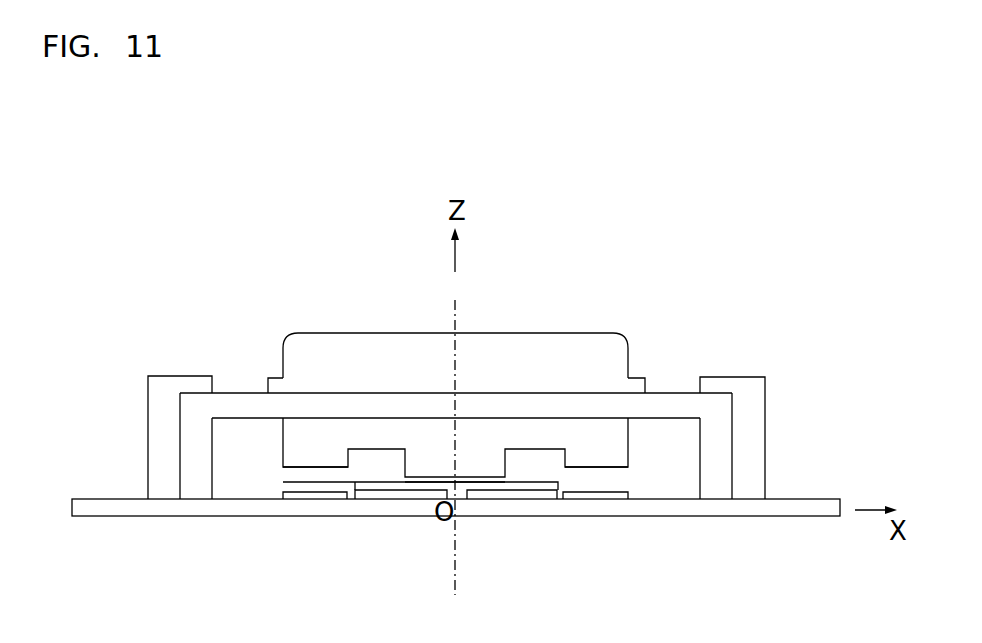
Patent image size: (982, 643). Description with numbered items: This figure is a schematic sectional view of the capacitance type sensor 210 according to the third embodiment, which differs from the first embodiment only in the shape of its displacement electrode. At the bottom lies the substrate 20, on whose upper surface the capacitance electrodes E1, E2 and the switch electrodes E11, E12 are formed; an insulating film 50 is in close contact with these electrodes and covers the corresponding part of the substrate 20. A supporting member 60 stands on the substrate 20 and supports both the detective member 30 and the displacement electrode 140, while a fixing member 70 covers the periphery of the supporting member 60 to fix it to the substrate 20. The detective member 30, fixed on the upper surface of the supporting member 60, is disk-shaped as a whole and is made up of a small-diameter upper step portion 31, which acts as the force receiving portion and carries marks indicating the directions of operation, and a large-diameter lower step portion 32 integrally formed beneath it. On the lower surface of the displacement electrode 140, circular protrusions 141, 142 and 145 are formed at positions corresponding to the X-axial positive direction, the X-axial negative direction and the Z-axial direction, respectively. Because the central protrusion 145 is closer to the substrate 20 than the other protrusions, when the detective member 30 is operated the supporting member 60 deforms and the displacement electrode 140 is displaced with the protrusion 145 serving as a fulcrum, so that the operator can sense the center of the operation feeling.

The substrate 20 is at (123, 505).
The detective member 30 is at (295, 262).
The upper step portion 31 is at (311, 350).
The lower step portion 32 is at (275, 383).
The insulating film 50 is at (355, 482).
The supporting member 60 is at (223, 406).
The fixing member 70 is at (748, 393).
The displacement electrode 140 is at (298, 444).
The circular protrusion 141 is at (597, 458).
The circular protrusion 142 is at (313, 458).
The circular protrusion 145 is at (430, 490).
The capacitance type sensor 210 is at (650, 273).
The capacitance electrode E1 is at (512, 497).
The capacitance electrode E2 is at (385, 500).
The switch electrode E11 is at (597, 497).
The switch electrode E12 is at (317, 494).